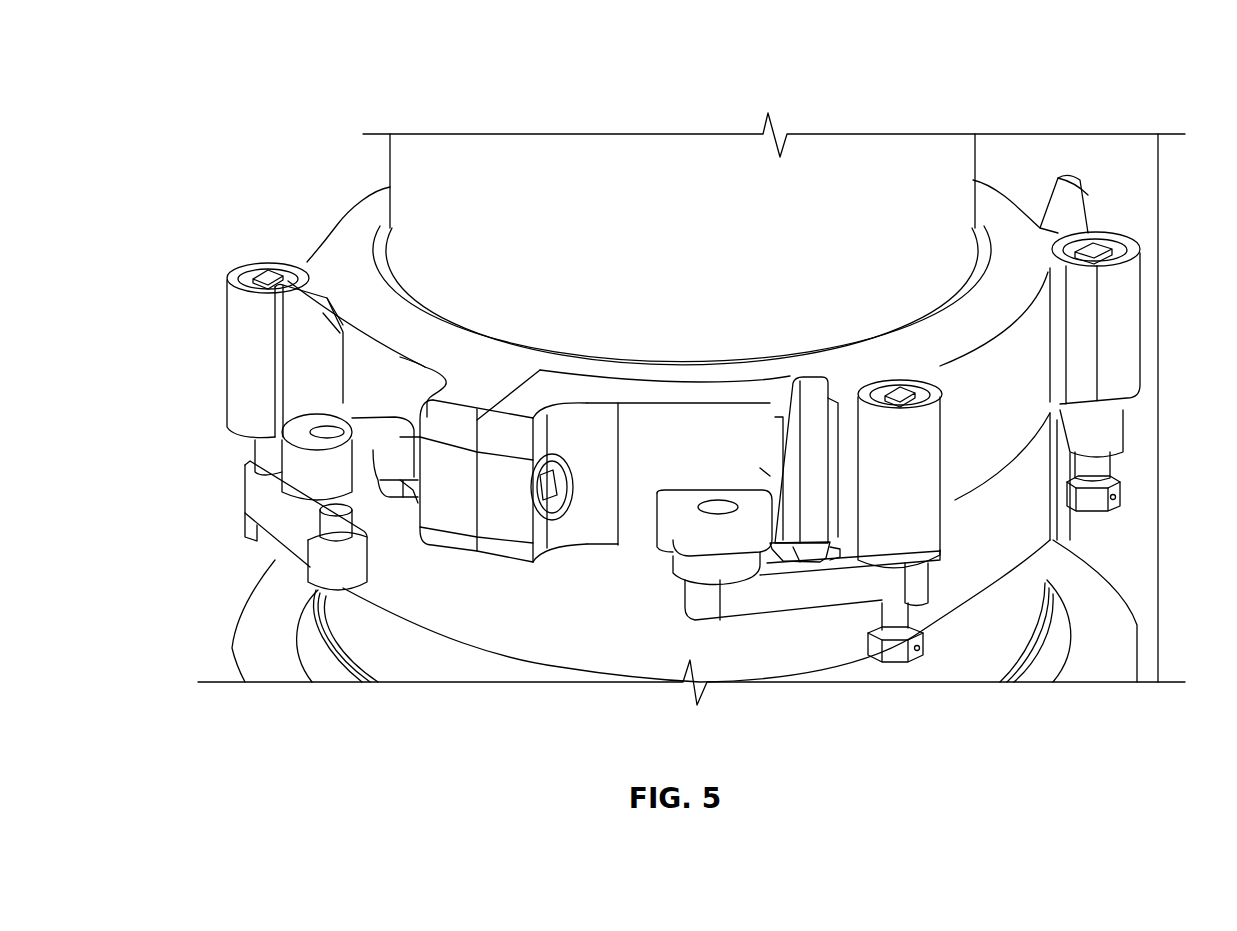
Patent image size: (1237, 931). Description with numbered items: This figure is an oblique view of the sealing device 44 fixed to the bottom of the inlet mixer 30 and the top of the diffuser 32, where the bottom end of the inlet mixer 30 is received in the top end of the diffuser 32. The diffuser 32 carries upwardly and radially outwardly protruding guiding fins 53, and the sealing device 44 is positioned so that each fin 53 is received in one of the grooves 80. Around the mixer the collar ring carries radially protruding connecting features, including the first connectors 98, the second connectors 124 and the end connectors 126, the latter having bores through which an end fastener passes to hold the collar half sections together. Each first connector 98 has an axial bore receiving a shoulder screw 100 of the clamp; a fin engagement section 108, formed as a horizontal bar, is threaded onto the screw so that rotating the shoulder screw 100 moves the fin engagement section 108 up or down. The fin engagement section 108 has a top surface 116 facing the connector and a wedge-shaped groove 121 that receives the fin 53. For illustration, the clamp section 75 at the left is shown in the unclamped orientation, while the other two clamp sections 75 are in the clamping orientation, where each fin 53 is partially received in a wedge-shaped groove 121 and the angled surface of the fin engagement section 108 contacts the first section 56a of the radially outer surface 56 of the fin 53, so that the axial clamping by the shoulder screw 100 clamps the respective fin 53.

The inlet mixer 30 is at (905, 150).
The diffuser 32 is at (948, 608).
The sealing device 44 is at (989, 496).
The guiding fin 53 is at (297, 298).
The radially outer surface 56 is at (817, 517).
The first section 56a is at (803, 557).
The clamp section 75 is at (230, 536).
The groove 80 is at (340, 322).
The first connector 98 is at (932, 437).
The shoulder screw 100 is at (903, 617).
The fin engagement section 108 is at (740, 610).
The top surface 116 is at (822, 560).
The wedge-shaped groove 121 is at (828, 552).
The second connector 124 is at (693, 543).
The end connector 126 is at (457, 517).